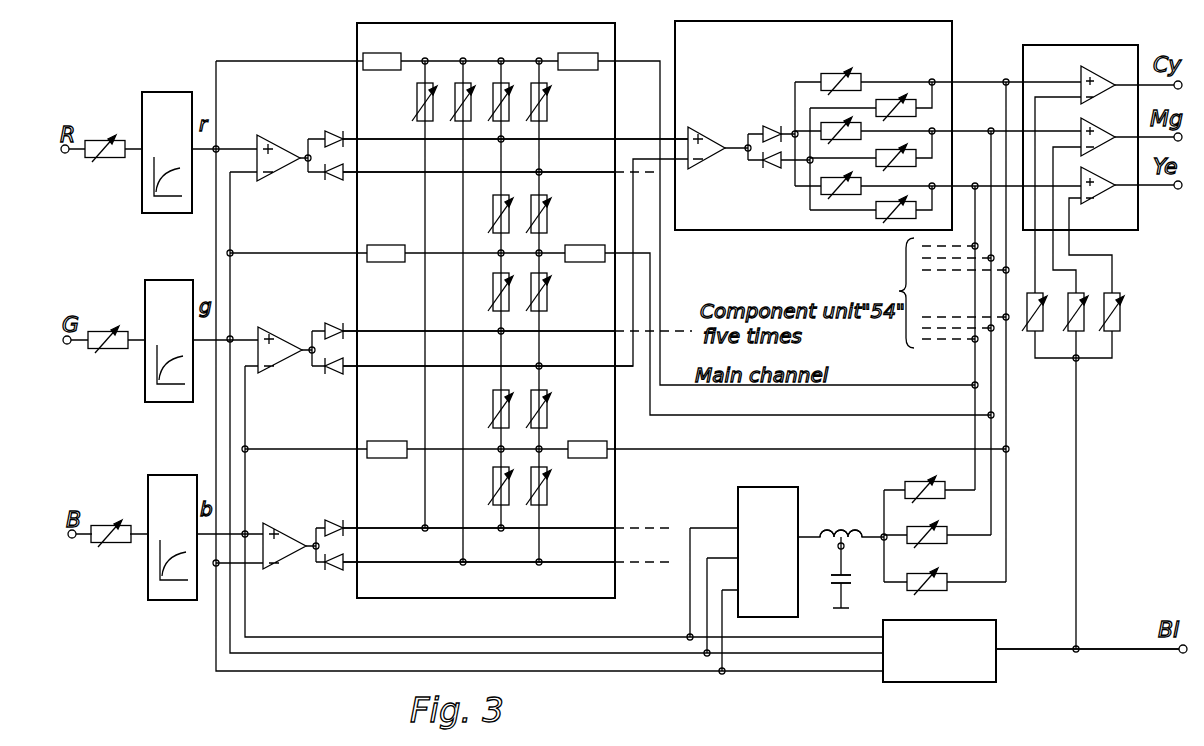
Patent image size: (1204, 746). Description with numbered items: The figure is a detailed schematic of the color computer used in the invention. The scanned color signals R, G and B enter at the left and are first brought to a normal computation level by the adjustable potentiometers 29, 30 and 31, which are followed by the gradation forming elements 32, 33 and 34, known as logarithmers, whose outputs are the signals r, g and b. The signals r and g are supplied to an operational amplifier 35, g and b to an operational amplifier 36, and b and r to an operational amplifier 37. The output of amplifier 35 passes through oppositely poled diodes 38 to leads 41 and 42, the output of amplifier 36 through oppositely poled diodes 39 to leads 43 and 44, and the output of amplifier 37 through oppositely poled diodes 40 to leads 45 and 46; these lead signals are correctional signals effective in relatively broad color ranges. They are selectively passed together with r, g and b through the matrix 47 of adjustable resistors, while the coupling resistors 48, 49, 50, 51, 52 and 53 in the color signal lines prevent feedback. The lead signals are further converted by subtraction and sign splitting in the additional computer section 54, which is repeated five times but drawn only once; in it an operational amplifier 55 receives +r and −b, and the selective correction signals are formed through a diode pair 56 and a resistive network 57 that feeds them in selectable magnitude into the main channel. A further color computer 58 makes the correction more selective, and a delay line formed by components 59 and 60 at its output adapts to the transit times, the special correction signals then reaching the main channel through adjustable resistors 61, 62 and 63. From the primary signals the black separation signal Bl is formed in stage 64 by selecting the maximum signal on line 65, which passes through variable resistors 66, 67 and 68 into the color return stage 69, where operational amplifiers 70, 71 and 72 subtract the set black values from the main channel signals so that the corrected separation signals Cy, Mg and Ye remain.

The potentiometer 29 is at (115, 160).
The potentiometer 30 is at (117, 350).
The potentiometer 31 is at (120, 545).
The gradation forming element 32 is at (150, 100).
The gradation forming element 33 is at (158, 290).
The gradation forming element 34 is at (162, 486).
The operational amplifier 35 is at (280, 152).
The operational amplifier 36 is at (283, 345).
The operational amplifier 37 is at (288, 543).
The oppositely poled diodes 38 is at (322, 182).
The oppositely poled diodes 39 is at (325, 382).
The oppositely poled diodes 40 is at (326, 580).
The lead 41 is at (383, 139).
The lead 42 is at (410, 172).
The lead 43 is at (387, 331).
The lead 44 is at (405, 368).
The lead 45 is at (388, 528).
The lead 46 is at (378, 564).
The matrix 47 is at (357, 36).
The coupling resistor 48 is at (385, 64).
The coupling resistor 49 is at (391, 251).
The coupling resistor 50 is at (392, 446).
The coupling resistor 51 is at (574, 63).
The coupling resistor 52 is at (588, 249).
The coupling resistor 53 is at (592, 443).
The additional computer section 54 is at (945, 39).
The operational amplifier 55 is at (712, 141).
The diode pair 56 is at (772, 170).
The resistive network 57 is at (932, 55).
The further color computer 58 is at (750, 494).
The delay line component 59 is at (838, 534).
The delay line component 60 is at (833, 581).
The adjustable resistor 61 is at (912, 486).
The adjustable resistor 62 is at (946, 530).
The adjustable resistor 63 is at (948, 577).
The black separation stage 64 is at (998, 641).
The line 65 is at (1017, 652).
The variable resistor 66 is at (1031, 338).
The variable resistor 67 is at (1077, 297).
The variable resistor 68 is at (1118, 328).
The color return stage 69 is at (1068, 58).
The operational amplifier 70 is at (1100, 83).
The operational amplifier 71 is at (1100, 135).
The operational amplifier 72 is at (1100, 185).